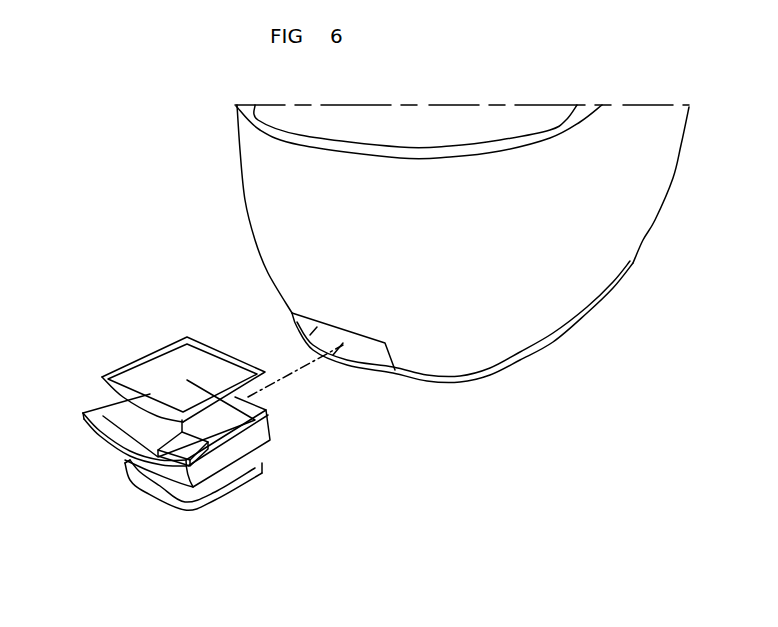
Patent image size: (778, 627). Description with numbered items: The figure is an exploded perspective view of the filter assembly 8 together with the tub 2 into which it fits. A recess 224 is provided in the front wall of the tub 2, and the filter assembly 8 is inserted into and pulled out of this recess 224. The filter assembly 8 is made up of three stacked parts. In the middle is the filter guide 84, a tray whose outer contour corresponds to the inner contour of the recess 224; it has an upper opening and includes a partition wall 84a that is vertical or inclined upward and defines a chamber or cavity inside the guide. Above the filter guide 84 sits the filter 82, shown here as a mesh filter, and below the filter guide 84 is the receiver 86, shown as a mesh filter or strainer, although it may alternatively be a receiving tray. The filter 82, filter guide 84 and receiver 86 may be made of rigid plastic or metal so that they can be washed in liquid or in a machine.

The tub 2 is at (543, 366).
The recess 224 is at (365, 353).
The filter assembly 8 is at (33, 392).
The filter 82 is at (100, 380).
The filter guide 84 is at (125, 457).
The partition wall 84a is at (268, 405).
The receiver 86 is at (130, 477).